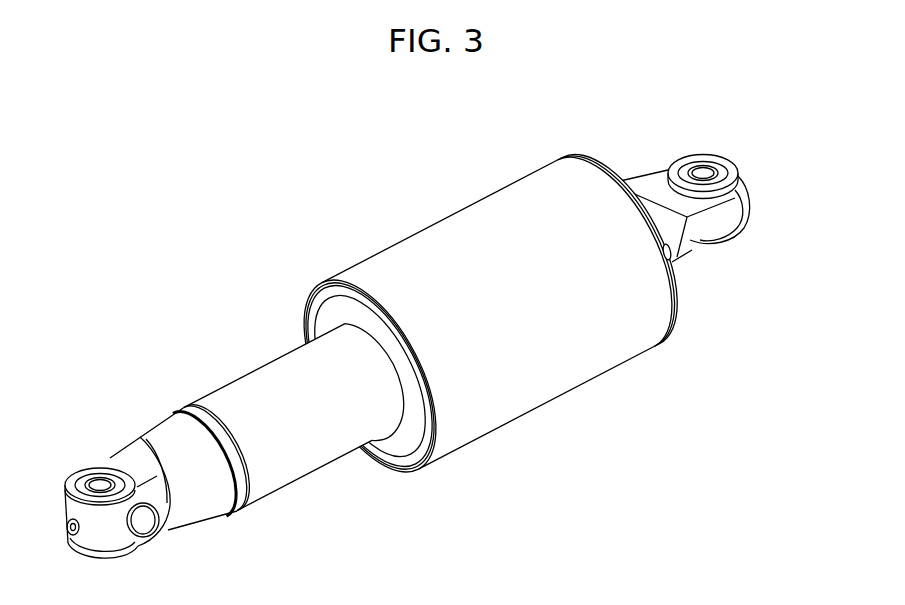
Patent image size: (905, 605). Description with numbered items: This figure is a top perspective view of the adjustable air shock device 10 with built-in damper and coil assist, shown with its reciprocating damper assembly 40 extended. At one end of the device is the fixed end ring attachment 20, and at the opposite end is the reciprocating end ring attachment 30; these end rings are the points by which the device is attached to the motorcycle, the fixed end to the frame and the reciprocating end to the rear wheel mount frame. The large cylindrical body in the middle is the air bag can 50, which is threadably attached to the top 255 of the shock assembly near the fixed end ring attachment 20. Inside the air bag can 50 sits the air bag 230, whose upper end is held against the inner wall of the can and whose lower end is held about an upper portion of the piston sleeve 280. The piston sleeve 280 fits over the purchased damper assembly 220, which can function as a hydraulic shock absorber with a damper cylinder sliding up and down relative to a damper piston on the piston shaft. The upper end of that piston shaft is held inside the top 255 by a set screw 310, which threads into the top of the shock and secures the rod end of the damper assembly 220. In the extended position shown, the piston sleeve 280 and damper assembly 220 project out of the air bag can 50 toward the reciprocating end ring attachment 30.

The shock device with assist coil 10 is at (428, 343).
The fixed end ring attachment 20 is at (703, 173).
The reciprocating end ring attachment 30 is at (97, 487).
The reciprocating damper assembly 40 is at (239, 435).
The air bag can 50 is at (577, 367).
The damper assembly 220 is at (193, 532).
The air bag 230 is at (338, 300).
The top of shock assembly 255 is at (688, 252).
The piston sleeve 280 is at (298, 458).
The set screw 310 is at (668, 263).